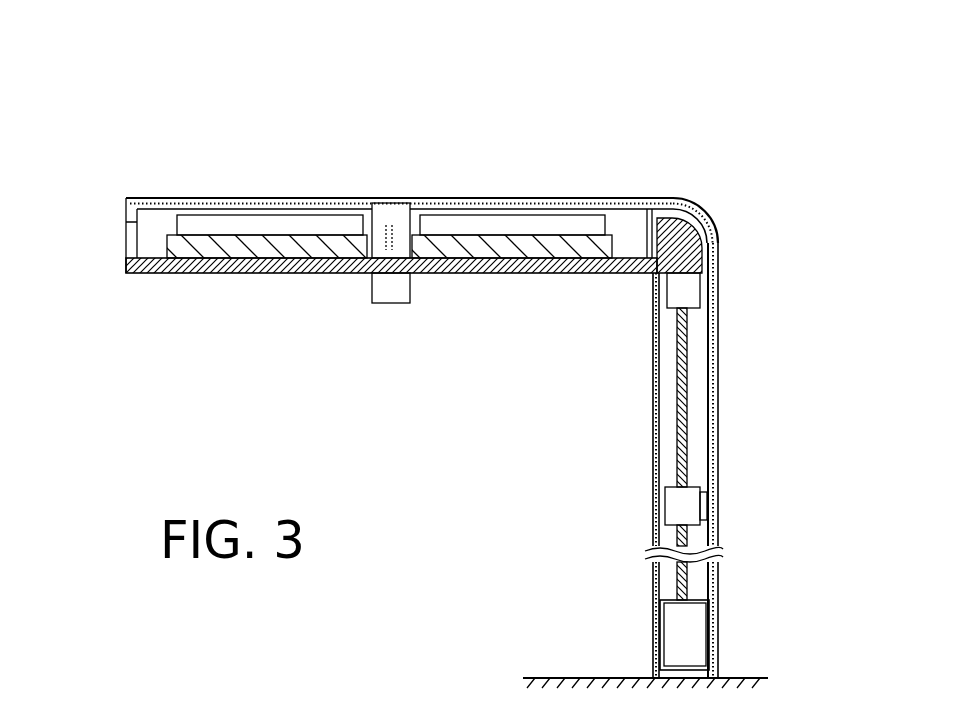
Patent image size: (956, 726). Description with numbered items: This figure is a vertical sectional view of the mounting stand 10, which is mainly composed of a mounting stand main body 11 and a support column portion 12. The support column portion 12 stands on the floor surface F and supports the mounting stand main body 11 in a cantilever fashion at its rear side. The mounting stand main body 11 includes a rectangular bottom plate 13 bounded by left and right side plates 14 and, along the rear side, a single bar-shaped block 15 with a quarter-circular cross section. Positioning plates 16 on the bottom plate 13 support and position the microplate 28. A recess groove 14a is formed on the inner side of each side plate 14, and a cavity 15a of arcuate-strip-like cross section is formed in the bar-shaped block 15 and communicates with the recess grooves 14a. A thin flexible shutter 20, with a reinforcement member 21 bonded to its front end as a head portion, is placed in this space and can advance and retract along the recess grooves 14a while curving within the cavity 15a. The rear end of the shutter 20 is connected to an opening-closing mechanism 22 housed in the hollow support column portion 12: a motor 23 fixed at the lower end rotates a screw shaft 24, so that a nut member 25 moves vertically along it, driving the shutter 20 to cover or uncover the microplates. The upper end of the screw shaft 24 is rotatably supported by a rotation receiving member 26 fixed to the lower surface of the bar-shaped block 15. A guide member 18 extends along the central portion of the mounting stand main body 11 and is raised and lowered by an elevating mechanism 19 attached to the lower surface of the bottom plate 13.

The mounting stand 10 is at (514, 90).
The mounting stand main body 11 is at (347, 300).
The support column portion 12 is at (719, 433).
The bottom plate 13 is at (293, 276).
The side plate 14 is at (313, 200).
The recess groove 14a is at (127, 207).
The bar-shaped block 15 is at (713, 226).
The cavity 15a is at (690, 212).
The positioning plate 16 is at (224, 248).
The guide member 18 is at (148, 241).
The elevating mechanism 19 is at (388, 292).
The shutter 20 is at (452, 200).
The reinforcement member 21 is at (380, 200).
The opening-closing mechanism 22 is at (671, 433).
The motor 23 is at (673, 622).
The screw shaft 24 is at (676, 548).
The nut member 25 is at (675, 512).
The rotation receiving member 26 is at (678, 292).
The microplate 28 is at (228, 222).
The floor surface F is at (543, 676).